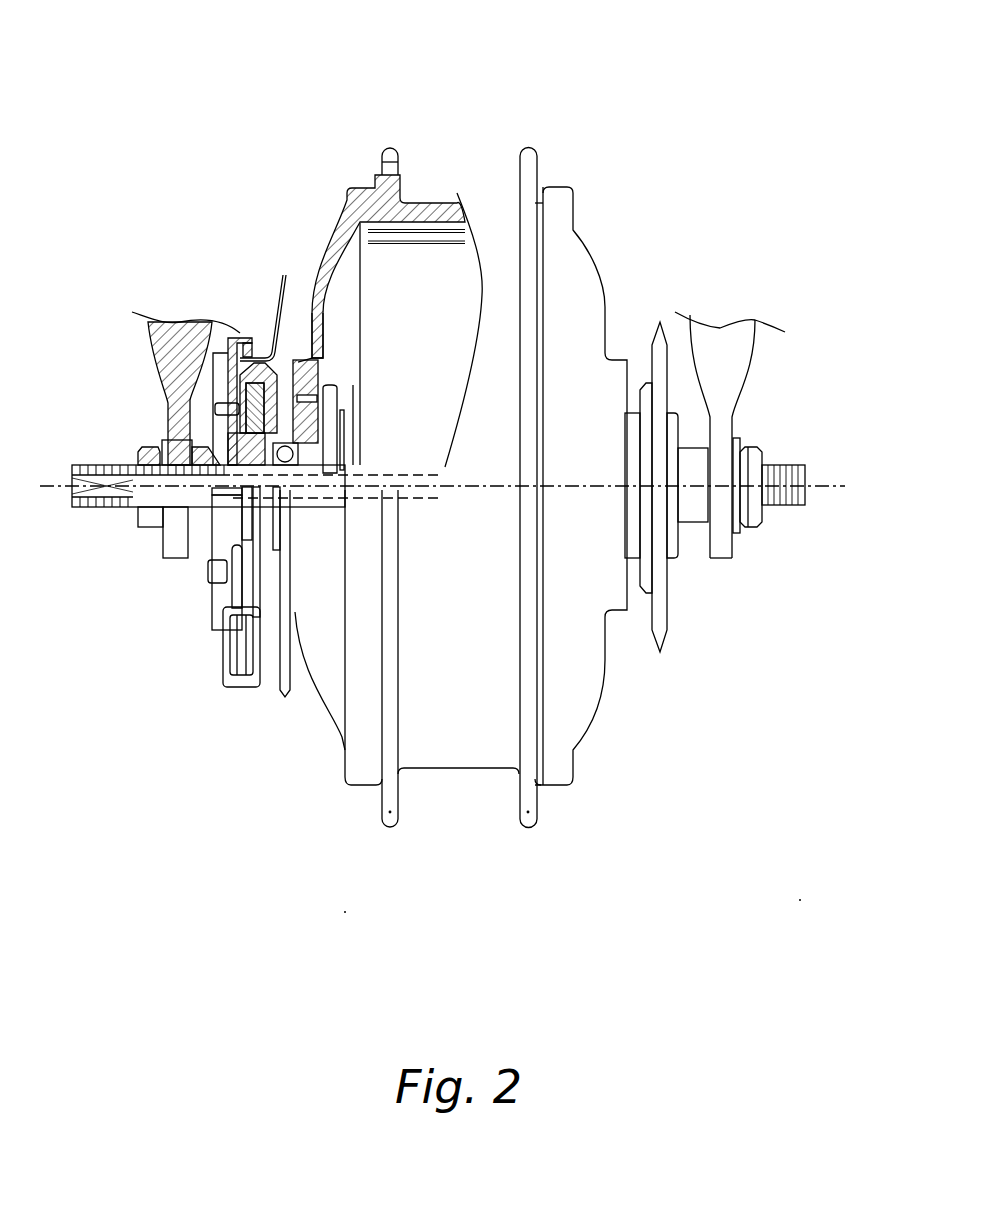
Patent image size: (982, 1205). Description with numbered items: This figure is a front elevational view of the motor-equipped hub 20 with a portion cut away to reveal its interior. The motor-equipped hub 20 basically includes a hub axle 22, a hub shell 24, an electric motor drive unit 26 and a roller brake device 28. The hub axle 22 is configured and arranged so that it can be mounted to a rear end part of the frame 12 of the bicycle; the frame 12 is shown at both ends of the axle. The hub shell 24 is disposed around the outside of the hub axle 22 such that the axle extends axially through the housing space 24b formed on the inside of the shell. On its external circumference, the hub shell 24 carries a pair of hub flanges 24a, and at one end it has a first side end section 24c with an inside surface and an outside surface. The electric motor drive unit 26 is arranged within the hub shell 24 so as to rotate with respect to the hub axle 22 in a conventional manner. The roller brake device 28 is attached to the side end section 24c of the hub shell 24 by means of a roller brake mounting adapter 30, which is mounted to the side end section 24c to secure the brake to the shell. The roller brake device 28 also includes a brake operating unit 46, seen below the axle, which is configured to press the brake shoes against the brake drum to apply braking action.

The frame 12 is at (742, 372).
The motor-equipped hub 20 is at (595, 165).
The hub axle 22 is at (383, 470).
The hub shell 24 is at (430, 208).
The hub flanges 24a is at (388, 147).
The housing space 24b is at (348, 262).
The first side end section 24c is at (322, 347).
The electric motor drive unit 26 is at (373, 282).
The roller brake device 28 is at (240, 333).
The roller brake mounting adapter 30 is at (297, 383).
The brake operating unit 46 is at (223, 588).